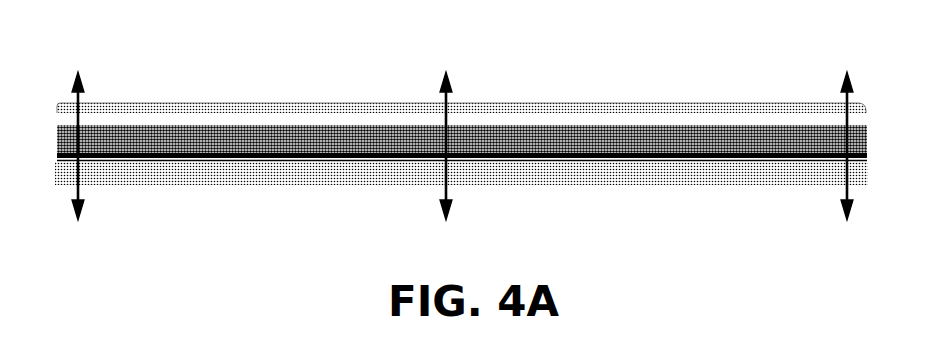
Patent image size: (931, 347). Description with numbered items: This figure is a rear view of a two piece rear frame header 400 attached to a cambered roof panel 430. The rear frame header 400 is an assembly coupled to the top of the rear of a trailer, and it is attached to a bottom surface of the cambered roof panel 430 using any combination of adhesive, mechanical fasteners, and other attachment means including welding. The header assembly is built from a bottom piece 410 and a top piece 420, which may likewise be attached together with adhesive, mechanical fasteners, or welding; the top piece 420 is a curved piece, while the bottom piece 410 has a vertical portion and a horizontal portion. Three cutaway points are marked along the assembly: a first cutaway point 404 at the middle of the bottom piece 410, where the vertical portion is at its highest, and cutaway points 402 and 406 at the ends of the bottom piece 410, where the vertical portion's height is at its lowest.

The two piece rear frame header 400 is at (280, 48).
The cutaway point 402 is at (77, 132).
The first cutaway point 404 is at (445, 132).
The cutaway point 406 is at (845, 132).
The bottom piece 410 is at (312, 180).
The top piece 420 is at (637, 155).
The cambered roof panel 430 is at (613, 135).